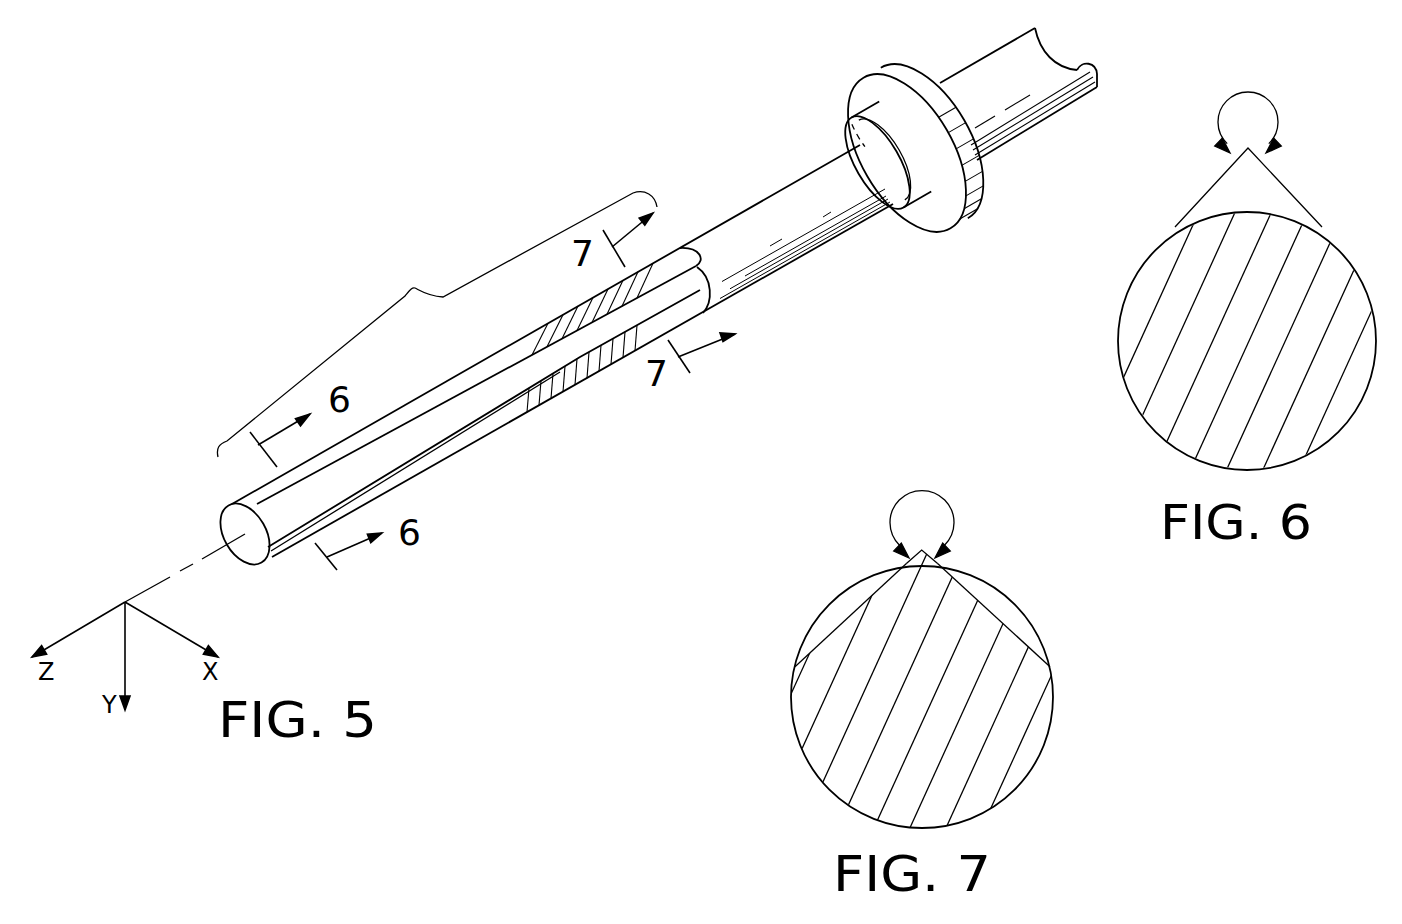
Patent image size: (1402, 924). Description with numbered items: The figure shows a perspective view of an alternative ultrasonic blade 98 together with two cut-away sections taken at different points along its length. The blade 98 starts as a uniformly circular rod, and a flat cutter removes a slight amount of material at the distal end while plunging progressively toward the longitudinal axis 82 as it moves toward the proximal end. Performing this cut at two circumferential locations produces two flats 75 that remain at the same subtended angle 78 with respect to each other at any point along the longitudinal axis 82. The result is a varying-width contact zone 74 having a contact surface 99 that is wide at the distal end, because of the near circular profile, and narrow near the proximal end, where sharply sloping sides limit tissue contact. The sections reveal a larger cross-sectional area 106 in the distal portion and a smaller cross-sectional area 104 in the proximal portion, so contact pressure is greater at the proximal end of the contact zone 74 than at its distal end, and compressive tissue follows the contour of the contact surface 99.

In FIG. 5, the contact zone 74 is at (437, 324).
In FIG. 5, the flats 75 is at (688, 303).
In FIG. 7, the flats 75 is at (845, 617).
In FIG. 6, the subtended angle 78 is at (1280, 109).
In FIG. 7, the subtended angle 78 is at (948, 512).
In FIG. 5, the longitudinal axis 82 is at (168, 577).
In FIG. 5, the blade 98 is at (445, 413).
In FIG. 6, the blade 98 is at (1303, 425).
In FIG. 7, the blade 98 is at (1012, 748).
In FIG. 5, the contact surface 99 is at (303, 500).
In FIG. 6, the contact surface 99 is at (1247, 211).
In FIG. 7, the contact surface 99 is at (933, 562).
In FIG. 7, the cross-sectional area 104 is at (830, 710).
In FIG. 6, the cross-sectional area 106 is at (1165, 317).